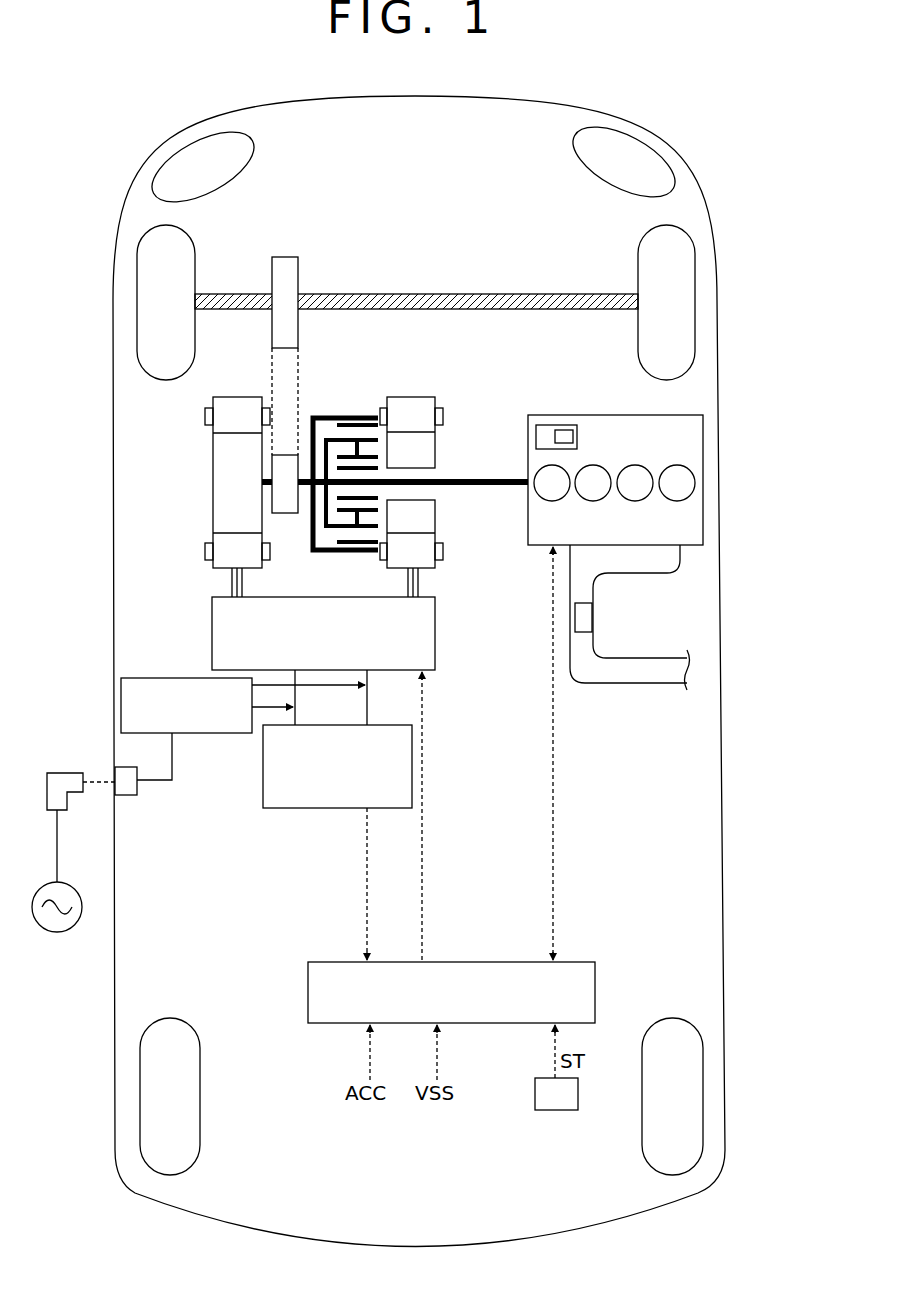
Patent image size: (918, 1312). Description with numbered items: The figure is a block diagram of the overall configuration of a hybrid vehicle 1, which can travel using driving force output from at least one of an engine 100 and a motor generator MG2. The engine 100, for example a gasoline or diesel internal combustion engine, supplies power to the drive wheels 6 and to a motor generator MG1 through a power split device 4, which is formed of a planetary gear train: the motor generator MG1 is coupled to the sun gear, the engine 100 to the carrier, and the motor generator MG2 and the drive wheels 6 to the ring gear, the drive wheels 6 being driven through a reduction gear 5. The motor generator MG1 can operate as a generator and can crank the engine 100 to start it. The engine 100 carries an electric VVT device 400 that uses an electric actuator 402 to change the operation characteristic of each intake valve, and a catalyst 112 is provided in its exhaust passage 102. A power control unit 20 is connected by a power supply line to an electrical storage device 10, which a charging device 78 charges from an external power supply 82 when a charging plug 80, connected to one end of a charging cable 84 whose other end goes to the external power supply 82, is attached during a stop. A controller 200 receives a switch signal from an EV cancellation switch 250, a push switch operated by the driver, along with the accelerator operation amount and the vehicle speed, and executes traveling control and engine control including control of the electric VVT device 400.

The hybrid vehicle 1 is at (142, 103).
The power split device 4 is at (348, 415).
The reduction gear 5 is at (285, 252).
The drive wheels 6 is at (697, 308).
The electrical storage device 10 is at (263, 770).
The power control unit 20 is at (436, 638).
The charging device 78 is at (121, 694).
The charging plug 80 is at (65, 772).
The external power supply 82 is at (62, 882).
The charging cable 84 is at (56, 830).
The engine 100 is at (703, 525).
The exhaust passage 102 is at (570, 660).
The catalyst 112 is at (593, 617).
The controller 200 is at (308, 995).
The EV cancellation switch 250 is at (557, 1110).
The electric VVT device 400 is at (539, 424).
The electric actuator 402 is at (561, 429).
The motor generator MG1 is at (412, 395).
The motor generator MG2 is at (237, 395).